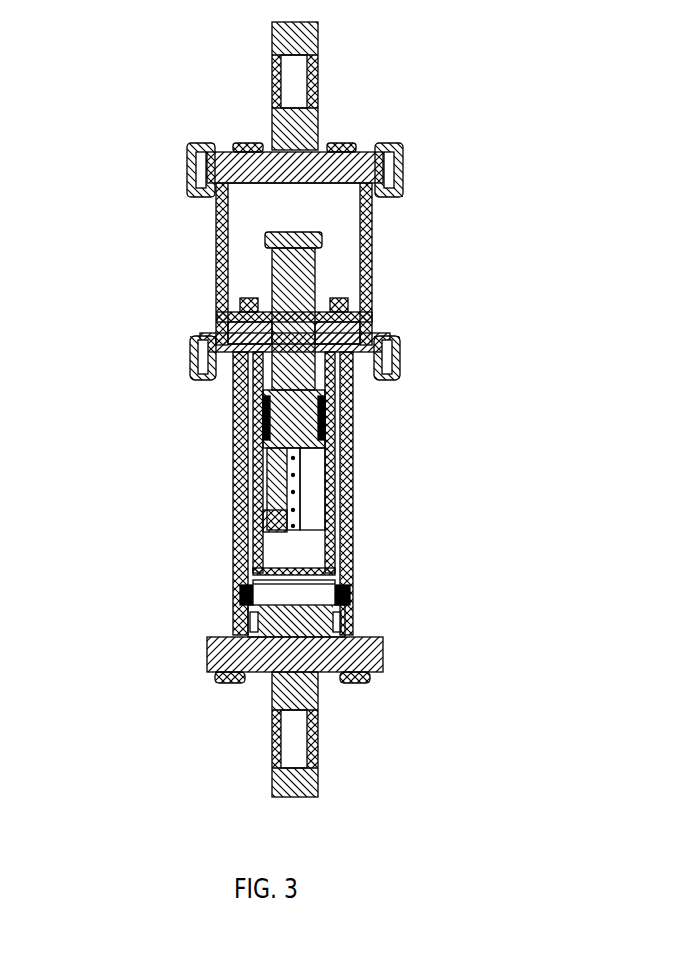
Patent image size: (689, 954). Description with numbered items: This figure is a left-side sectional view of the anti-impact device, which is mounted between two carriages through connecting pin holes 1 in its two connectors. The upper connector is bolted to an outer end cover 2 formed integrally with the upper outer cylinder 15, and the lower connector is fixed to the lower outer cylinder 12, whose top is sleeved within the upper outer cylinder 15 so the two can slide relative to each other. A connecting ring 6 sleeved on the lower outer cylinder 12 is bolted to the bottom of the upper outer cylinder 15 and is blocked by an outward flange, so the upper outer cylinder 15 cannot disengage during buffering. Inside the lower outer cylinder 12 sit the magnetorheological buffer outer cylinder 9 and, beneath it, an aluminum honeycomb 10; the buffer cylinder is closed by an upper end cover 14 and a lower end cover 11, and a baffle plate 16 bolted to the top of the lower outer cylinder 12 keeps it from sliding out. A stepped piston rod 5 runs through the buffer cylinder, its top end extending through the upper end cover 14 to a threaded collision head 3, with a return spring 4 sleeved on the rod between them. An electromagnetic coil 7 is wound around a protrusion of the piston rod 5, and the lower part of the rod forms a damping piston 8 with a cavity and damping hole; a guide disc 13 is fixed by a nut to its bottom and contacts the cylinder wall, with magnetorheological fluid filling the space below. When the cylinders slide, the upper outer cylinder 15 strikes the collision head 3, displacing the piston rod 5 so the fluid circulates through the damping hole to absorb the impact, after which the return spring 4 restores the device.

The connecting pin hole 1 is at (295, 90).
The outer end cover 2 is at (378, 162).
The collision head 3 is at (325, 238).
The return spring 4 is at (322, 283).
The piston rod 5 is at (317, 322).
The connecting ring 6 is at (405, 362).
The electromagnetic coil 7 is at (334, 417).
The damping piston 8 is at (319, 487).
The magnetorheological buffer outer cylinder 9 is at (338, 537).
The aluminum honeycomb 10 is at (299, 627).
The lower end cover 11 is at (246, 477).
The lower outer cylinder 12 is at (246, 477).
The guide disc 13 is at (246, 477).
The upper end cover 14 is at (246, 477).
The upper outer cylinder 15 is at (246, 477).
The baffle plate 16 is at (246, 477).